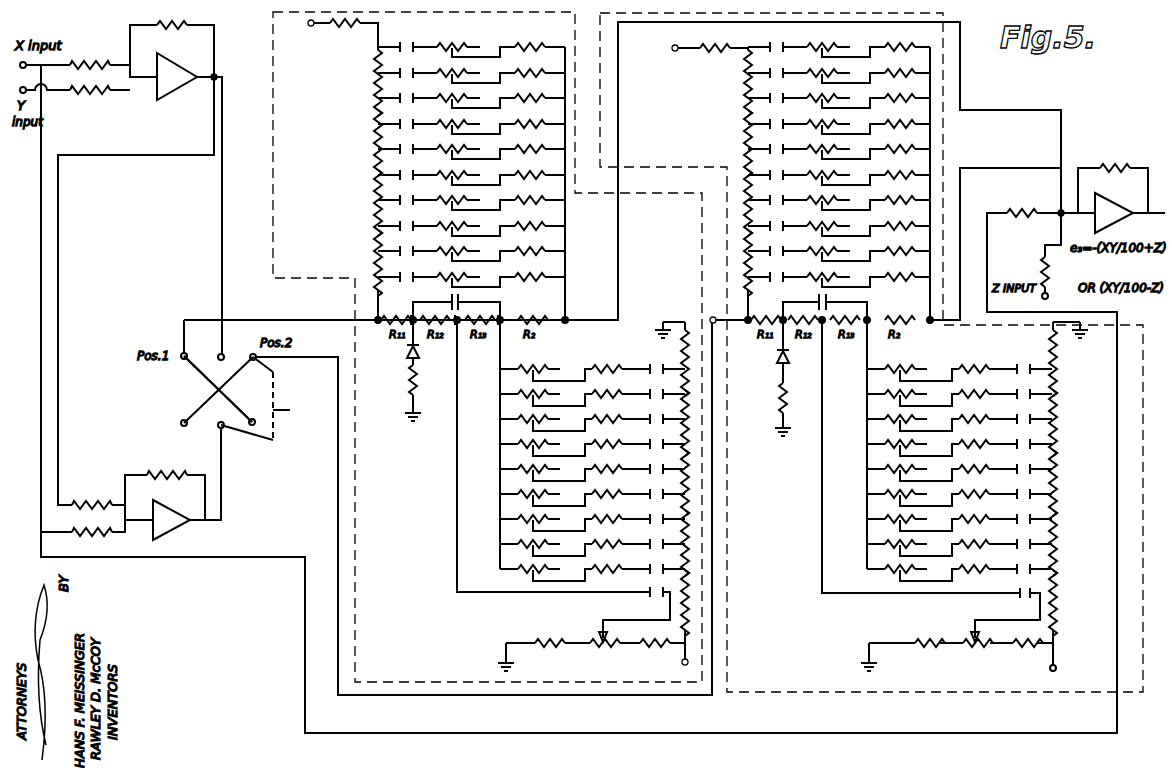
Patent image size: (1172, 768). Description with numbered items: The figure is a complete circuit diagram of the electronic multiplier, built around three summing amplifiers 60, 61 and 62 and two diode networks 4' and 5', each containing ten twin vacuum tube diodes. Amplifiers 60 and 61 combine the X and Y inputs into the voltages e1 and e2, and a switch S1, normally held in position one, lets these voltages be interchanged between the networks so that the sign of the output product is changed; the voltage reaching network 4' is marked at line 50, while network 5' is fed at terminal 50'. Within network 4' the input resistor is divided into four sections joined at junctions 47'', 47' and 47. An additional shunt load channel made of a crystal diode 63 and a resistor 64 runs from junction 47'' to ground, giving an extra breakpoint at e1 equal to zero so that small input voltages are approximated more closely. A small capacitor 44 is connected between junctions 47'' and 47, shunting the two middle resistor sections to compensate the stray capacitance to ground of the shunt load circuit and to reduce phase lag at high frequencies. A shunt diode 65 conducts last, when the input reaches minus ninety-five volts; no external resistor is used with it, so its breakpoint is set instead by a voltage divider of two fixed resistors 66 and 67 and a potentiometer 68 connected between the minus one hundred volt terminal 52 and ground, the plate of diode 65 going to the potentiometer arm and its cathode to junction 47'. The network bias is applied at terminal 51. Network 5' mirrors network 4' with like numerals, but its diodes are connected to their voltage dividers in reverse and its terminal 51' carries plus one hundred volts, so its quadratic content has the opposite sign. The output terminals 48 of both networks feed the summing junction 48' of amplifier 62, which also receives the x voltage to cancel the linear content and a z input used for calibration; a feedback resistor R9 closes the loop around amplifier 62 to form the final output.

The summing amplifier 60 is at (189, 203).
The summing amplifier 61 is at (171, 520).
The summing amplifier 62 is at (1111, 213).
The terminal 51 is at (330, 32).
The terminal 51' is at (702, 64).
The input line to network 4' 50 is at (306, 310).
The input terminal of network 5' 50' is at (726, 304).
The junction 47 is at (485, 312).
The junction 47' is at (440, 312).
The junction 47'' is at (398, 303).
The capacitor 44 is at (460, 302).
The output terminal 48 is at (589, 331).
The summing junction 48' is at (1034, 224).
The crystal diode 63 is at (406, 355).
The resistor 64 is at (407, 389).
The shunt diode 65 is at (648, 598).
The fixed resistor 66 is at (545, 645).
The fixed resistor 67 is at (648, 645).
The potentiometer 68 is at (598, 645).
The terminal 52 is at (674, 663).
The diode network 4' is at (487, 369).
The diode network 5' is at (871, 369).
The input voltage e1 is at (230, 215).
The input voltage e2 is at (233, 512).
The switch S1 is at (182, 387).
The feedback resistor R9 is at (1104, 179).